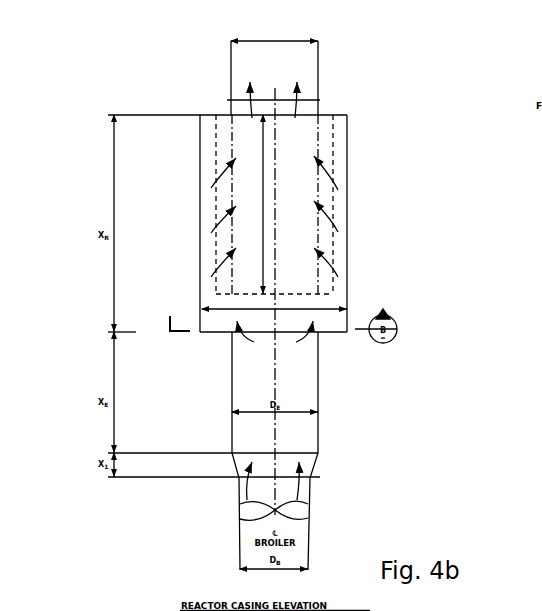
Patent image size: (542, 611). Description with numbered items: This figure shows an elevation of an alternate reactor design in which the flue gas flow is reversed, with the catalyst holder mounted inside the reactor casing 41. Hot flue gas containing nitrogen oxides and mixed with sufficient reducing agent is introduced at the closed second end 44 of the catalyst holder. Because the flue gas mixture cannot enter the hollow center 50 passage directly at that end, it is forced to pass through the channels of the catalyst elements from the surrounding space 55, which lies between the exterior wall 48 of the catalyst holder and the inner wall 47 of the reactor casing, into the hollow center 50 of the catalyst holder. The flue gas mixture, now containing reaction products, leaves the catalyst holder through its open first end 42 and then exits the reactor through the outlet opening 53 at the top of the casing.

The reactor casing 41 is at (447, 16).
The first end 42 is at (311, 116).
The second end 44 is at (335, 293).
The inner wall 47 is at (200, 253).
The exterior wall 48 is at (216, 207).
The center 50 is at (295, 152).
The outlet opening 53 is at (287, 52).
The surrounding space 55 is at (338, 237).